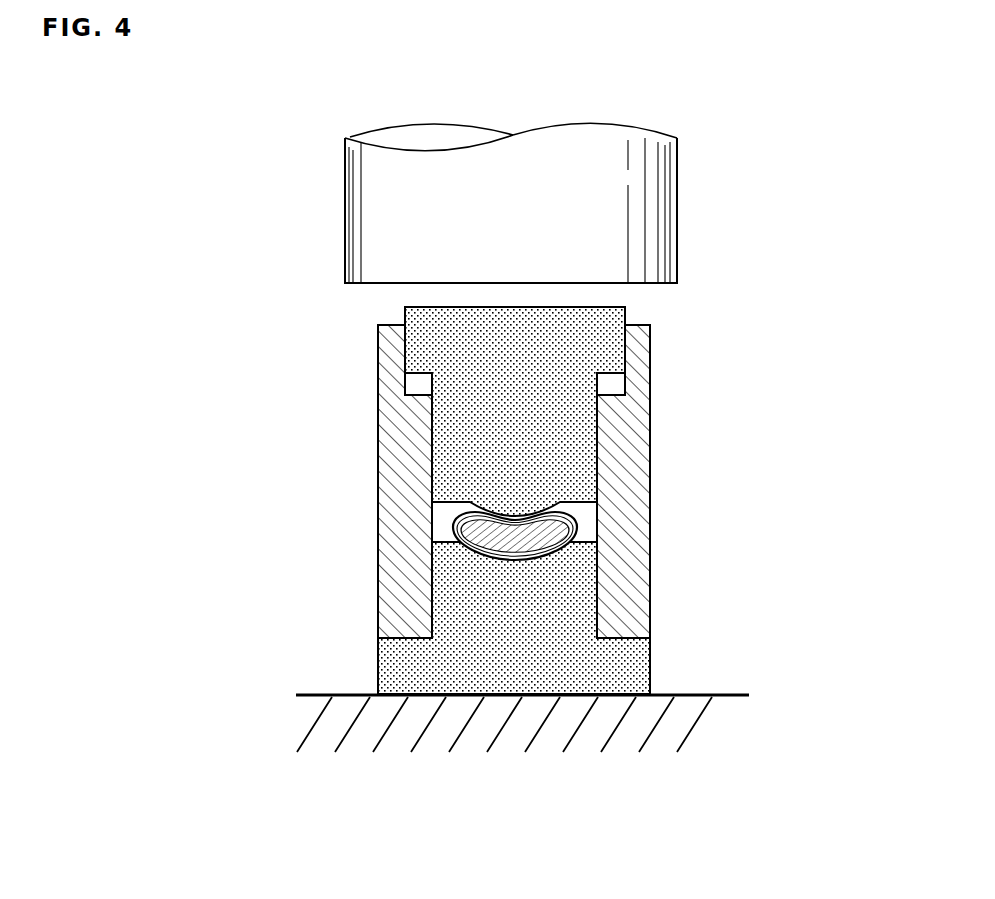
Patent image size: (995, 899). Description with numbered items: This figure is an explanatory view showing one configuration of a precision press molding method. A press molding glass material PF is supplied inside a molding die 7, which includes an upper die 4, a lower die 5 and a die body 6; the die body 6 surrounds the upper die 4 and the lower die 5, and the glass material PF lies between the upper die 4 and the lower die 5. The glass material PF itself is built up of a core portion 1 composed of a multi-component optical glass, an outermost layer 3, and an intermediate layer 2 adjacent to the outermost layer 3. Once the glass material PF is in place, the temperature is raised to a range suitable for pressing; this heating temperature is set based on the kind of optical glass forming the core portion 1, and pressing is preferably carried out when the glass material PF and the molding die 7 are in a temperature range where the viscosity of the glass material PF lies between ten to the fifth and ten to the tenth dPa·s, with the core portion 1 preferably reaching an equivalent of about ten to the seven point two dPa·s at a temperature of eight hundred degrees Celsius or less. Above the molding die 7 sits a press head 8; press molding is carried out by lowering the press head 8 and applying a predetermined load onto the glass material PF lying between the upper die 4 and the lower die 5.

The core portion 1 is at (530, 514).
The intermediate layer 2 is at (577, 526).
The outermost layer 3 is at (556, 543).
The upper die 4 is at (432, 426).
The lower die 5 is at (476, 588).
The die body 6 is at (407, 503).
The molding die 7 is at (186, 438).
The press head 8 is at (390, 193).
The press molding glass material PF is at (816, 448).